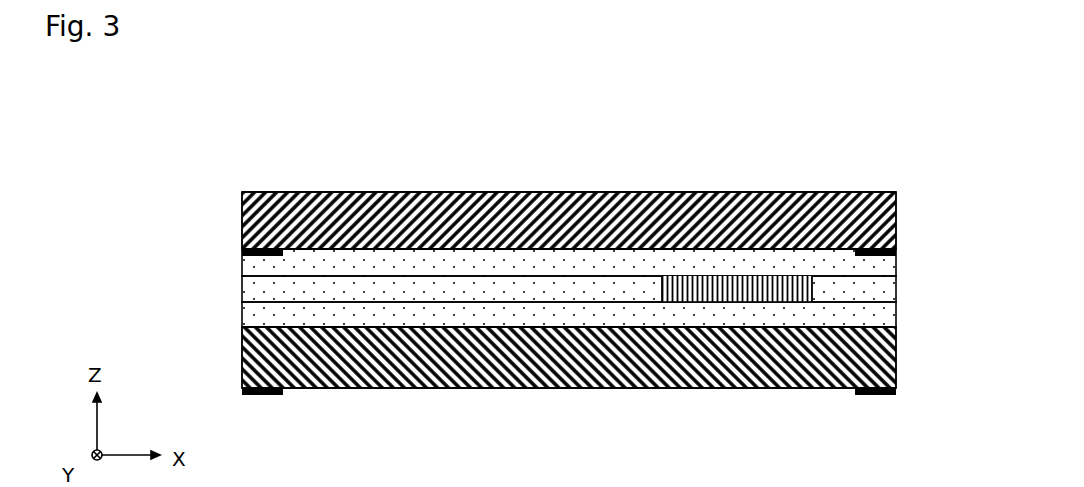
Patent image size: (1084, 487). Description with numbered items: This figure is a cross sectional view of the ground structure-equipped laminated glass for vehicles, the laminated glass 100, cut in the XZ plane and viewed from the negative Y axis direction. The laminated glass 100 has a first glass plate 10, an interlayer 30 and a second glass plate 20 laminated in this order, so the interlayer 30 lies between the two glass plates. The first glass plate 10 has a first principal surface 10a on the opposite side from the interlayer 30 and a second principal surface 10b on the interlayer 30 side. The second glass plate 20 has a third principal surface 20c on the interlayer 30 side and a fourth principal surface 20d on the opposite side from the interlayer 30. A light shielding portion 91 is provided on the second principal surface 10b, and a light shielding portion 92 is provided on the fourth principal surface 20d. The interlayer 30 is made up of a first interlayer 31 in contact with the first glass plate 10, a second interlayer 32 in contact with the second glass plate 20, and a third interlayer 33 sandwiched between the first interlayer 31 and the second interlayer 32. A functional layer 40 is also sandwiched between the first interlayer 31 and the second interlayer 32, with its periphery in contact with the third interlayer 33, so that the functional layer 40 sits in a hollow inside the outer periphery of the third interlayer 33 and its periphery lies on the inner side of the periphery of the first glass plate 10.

The laminated glass 100 is at (595, 191).
The first glass plate 10 is at (598, 202).
The first principal surface 10a is at (806, 193).
The second principal surface 10b is at (843, 250).
The second glass plate 20 is at (599, 379).
The third principal surface 20c is at (843, 328).
The fourth principal surface 20d is at (805, 388).
The interlayer 30 is at (492, 237).
The first interlayer 31 is at (242, 265).
The second interlayer 32 is at (242, 326).
The third interlayer 33 is at (527, 221).
The functional layer 40 is at (697, 292).
The light shielding portion 91 is at (896, 252).
The light shielding portion 92 is at (890, 395).